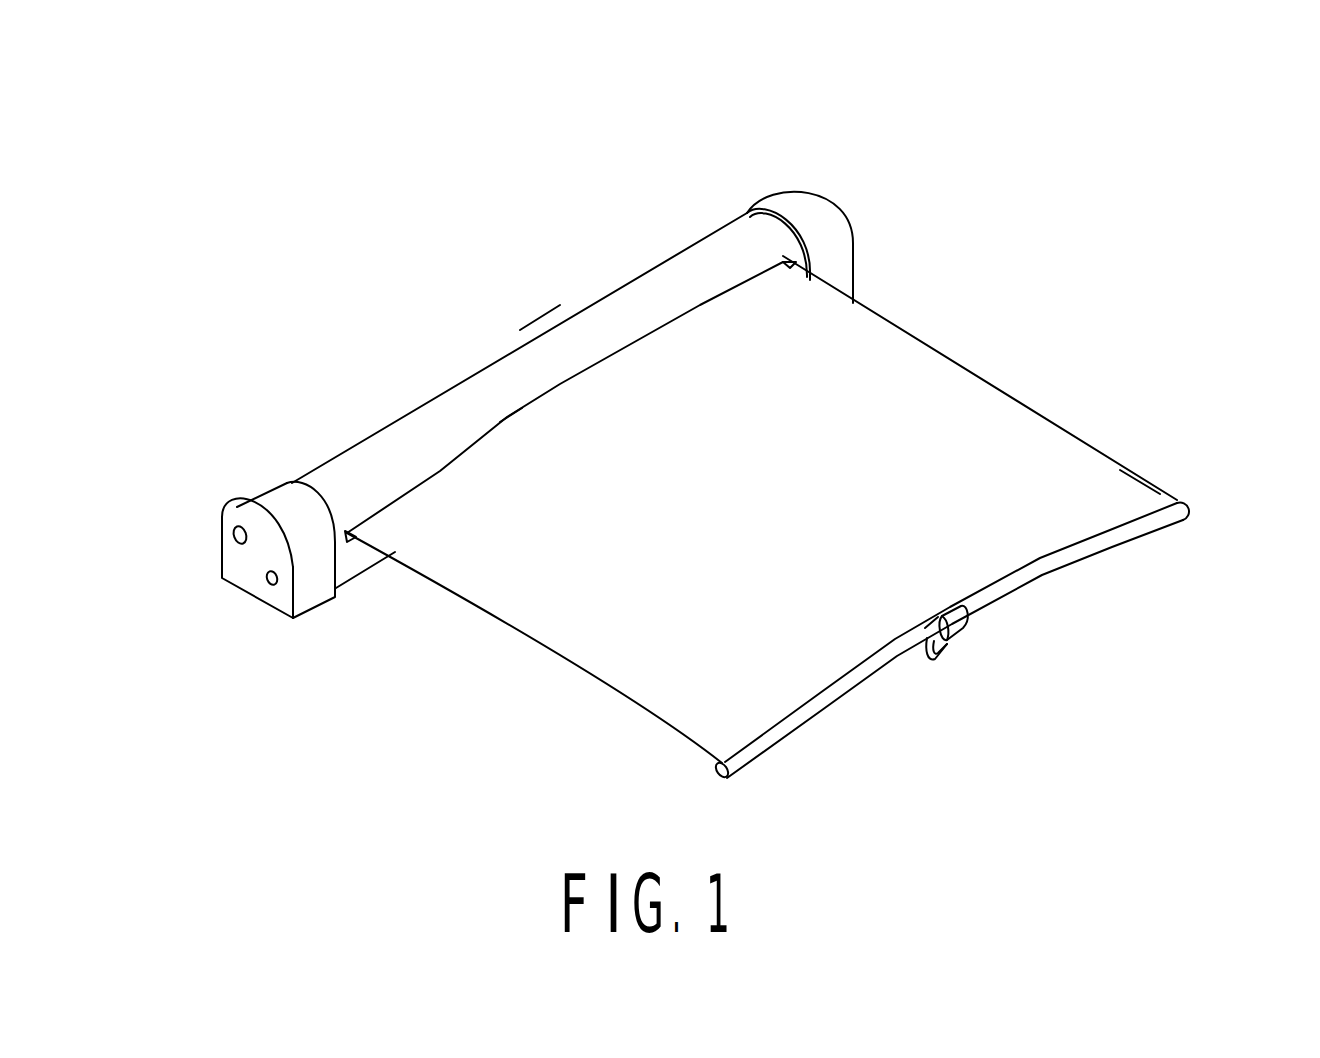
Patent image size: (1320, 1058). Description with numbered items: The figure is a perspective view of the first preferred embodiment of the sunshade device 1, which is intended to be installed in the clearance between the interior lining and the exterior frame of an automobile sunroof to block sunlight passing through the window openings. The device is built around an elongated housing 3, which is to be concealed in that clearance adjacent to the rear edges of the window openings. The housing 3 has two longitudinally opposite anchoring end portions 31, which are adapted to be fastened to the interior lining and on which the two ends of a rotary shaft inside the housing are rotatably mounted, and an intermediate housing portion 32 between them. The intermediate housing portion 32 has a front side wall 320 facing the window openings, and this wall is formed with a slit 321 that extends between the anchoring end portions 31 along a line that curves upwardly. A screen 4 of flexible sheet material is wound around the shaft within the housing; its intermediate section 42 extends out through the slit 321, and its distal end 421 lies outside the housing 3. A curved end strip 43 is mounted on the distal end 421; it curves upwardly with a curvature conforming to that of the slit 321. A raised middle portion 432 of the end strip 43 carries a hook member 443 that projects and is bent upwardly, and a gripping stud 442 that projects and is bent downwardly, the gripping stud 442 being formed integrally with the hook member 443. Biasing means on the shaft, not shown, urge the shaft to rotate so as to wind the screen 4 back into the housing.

The sunshade device 1 is at (1010, 170).
The elongated housing 3 is at (548, 268).
The anchoring end portions 31 is at (317, 600).
The intermediate housing portion 32 is at (700, 268).
The front side wall 320 is at (550, 377).
The slit 321 is at (510, 413).
The screen 4 is at (1000, 326).
The intermediate section 42 is at (1025, 438).
The distal end 421 is at (1085, 522).
The curved end strip 43 is at (1073, 548).
The raised middle portion 432 is at (910, 640).
The gripping stud 442 is at (953, 650).
The hook member 443 is at (963, 617).